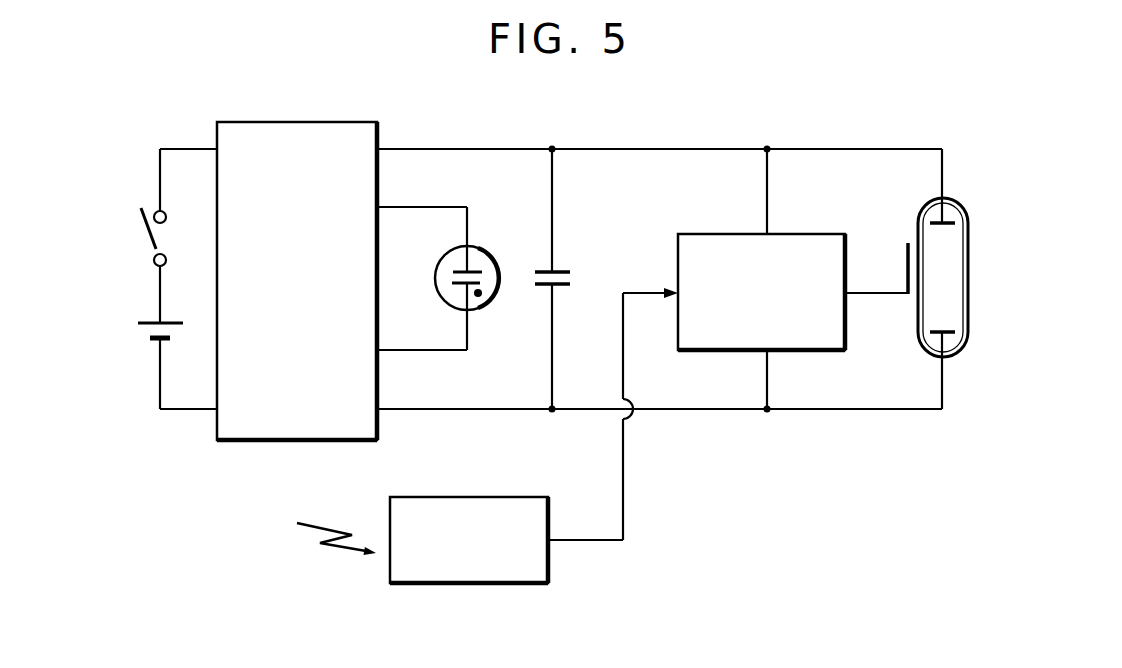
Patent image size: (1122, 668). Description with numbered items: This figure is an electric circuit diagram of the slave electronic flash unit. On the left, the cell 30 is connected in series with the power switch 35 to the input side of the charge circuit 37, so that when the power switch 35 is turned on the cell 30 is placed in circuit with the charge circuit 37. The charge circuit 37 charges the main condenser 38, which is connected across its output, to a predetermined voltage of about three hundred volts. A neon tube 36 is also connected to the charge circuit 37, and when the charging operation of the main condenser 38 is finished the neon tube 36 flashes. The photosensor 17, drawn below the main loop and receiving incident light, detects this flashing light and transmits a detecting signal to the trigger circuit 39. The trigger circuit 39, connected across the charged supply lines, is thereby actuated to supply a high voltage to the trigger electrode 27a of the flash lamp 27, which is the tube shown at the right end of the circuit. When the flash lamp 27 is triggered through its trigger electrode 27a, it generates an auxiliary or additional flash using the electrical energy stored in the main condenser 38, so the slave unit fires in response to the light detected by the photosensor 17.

The charge circuit 37 is at (294, 128).
The power switch 35 is at (148, 243).
The cell 30 is at (148, 335).
The neon tube 36 is at (487, 255).
The main condenser 38 is at (560, 268).
The trigger circuit 39 is at (730, 232).
The trigger electrode 27a is at (905, 262).
The flash lamp 27 is at (920, 310).
The photosensor 17 is at (466, 497).